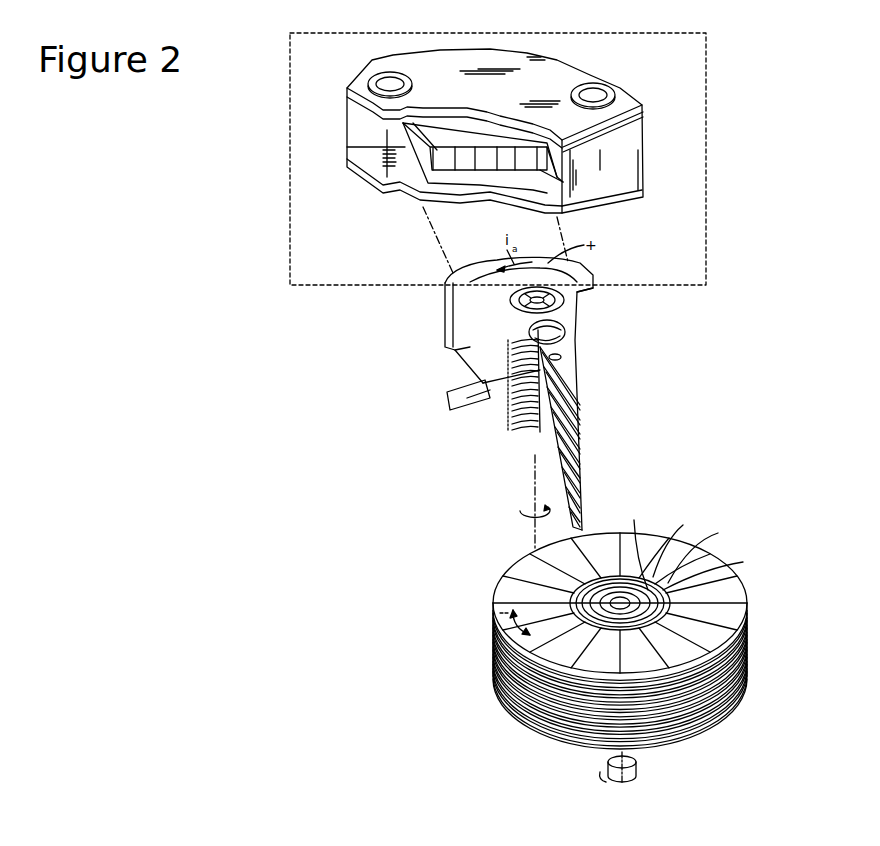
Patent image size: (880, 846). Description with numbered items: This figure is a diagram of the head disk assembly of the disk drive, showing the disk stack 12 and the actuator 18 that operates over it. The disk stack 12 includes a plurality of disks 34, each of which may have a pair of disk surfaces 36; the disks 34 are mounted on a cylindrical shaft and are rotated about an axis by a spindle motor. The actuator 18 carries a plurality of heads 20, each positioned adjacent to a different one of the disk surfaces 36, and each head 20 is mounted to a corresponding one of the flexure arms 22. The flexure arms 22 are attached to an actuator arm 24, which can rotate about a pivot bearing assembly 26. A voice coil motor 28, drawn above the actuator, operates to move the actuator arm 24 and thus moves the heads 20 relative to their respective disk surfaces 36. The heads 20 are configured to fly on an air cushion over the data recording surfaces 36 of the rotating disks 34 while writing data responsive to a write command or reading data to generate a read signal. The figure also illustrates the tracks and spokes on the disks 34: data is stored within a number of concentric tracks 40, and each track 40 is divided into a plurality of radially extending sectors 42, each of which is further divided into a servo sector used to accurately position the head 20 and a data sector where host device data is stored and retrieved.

The disk stack 12 is at (612, 640).
The actuator 18 is at (621, 393).
The head 20 is at (580, 433).
The flexure arm 22 is at (575, 396).
The actuator arm 24 is at (575, 343).
The pivot bearing assembly 26 is at (563, 297).
The voice coil motor 28 is at (706, 150).
The disk 34 is at (645, 730).
The disk surface 36 is at (733, 613).
The concentric track 40 is at (700, 543).
The radially extending sector 42 is at (497, 629).